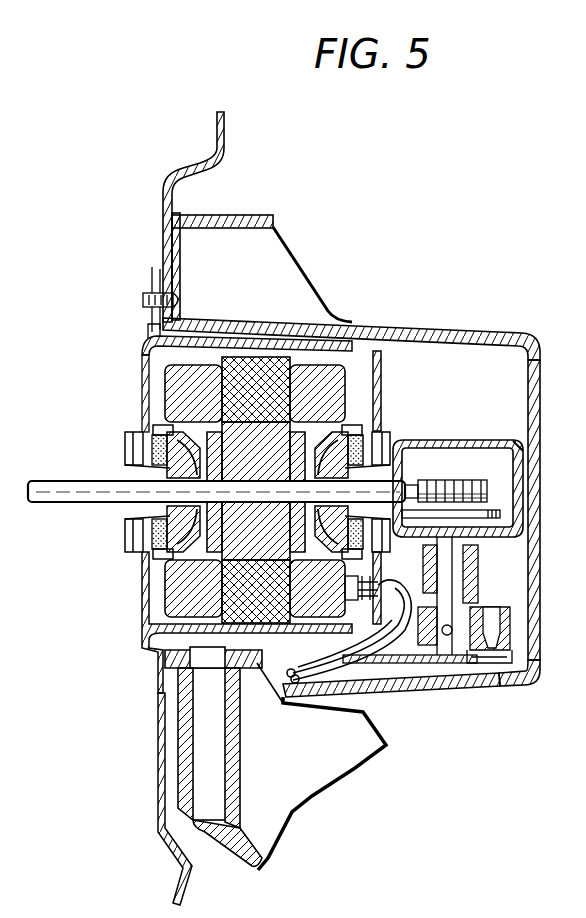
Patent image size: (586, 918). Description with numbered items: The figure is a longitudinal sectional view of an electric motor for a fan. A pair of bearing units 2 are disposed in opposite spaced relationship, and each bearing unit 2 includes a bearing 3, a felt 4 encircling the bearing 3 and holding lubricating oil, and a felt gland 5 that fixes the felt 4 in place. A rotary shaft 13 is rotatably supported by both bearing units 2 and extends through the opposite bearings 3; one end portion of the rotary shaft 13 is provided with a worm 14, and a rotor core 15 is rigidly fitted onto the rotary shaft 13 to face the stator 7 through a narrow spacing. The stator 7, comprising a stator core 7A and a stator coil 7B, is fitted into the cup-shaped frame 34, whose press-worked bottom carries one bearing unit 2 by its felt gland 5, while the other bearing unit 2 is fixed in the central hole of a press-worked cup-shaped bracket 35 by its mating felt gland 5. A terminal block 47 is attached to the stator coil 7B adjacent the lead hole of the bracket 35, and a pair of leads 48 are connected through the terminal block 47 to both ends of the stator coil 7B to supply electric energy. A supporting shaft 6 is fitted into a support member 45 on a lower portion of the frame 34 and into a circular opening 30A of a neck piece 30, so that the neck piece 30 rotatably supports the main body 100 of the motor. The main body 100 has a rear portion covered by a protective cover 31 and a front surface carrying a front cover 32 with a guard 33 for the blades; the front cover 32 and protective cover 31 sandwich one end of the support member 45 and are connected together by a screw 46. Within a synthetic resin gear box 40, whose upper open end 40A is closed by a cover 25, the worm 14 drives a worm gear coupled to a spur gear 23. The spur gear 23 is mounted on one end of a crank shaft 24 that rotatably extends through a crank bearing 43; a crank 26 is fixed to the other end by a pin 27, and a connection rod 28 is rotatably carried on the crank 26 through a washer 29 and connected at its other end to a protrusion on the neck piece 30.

The main body 100 is at (318, 350).
The protective cover 31 is at (541, 473).
The washer 29 is at (536, 683).
The connection rod 28 is at (440, 692).
The frame 34 is at (150, 347).
The front cover 32 is at (146, 373).
The support member 45 is at (242, 342).
The stator 7 is at (259, 471).
The stator coil 7B is at (195, 378).
The stator core 7A is at (272, 388).
The rotor core 15 is at (237, 455).
The rotary shaft 13 is at (70, 482).
The bearing unit 2 is at (150, 464).
The bearing 3 is at (140, 514).
The felt 4 is at (150, 548).
The felt gland 5 is at (196, 537).
The cover 25 is at (492, 457).
The gear box 40 is at (500, 518).
The upper open end 40A is at (522, 454).
The worm 14 is at (484, 494).
The spur gear 23 is at (488, 522).
The crank shaft 24 is at (445, 568).
The crank bearing 43 is at (478, 579).
The crank 26 is at (505, 635).
The pin 27 is at (450, 655).
The leads 48 is at (425, 664).
The cup-shaped bracket 35 is at (380, 645).
The terminal block 47 is at (348, 580).
The supporting shaft 6 is at (190, 737).
The circular opening 30A is at (240, 754).
The guard 33 is at (158, 834).
The neck piece 30 is at (330, 774).
The screw 46 is at (145, 301).